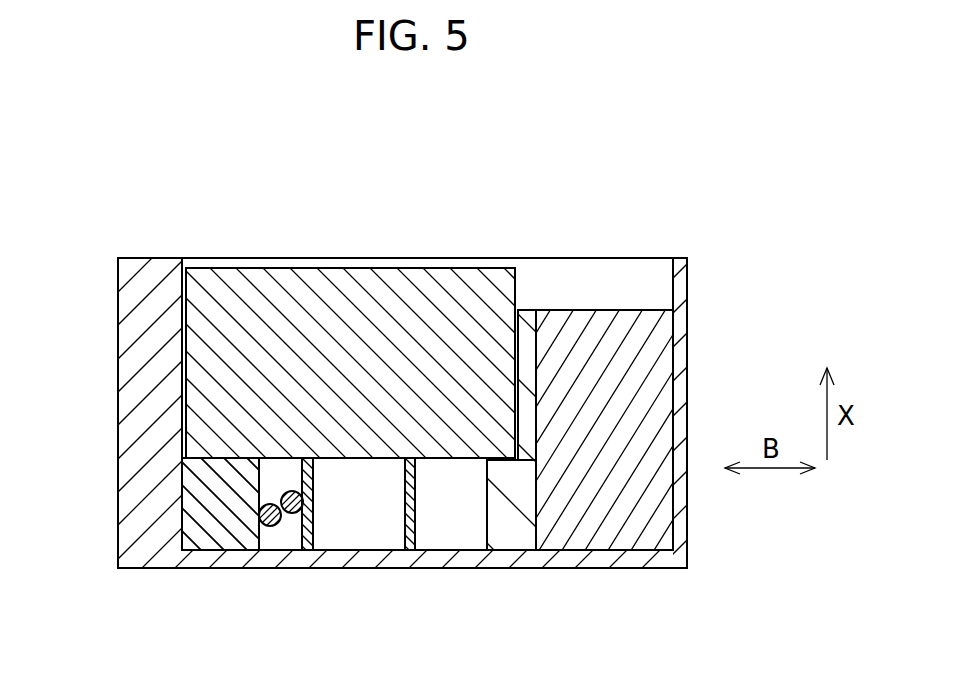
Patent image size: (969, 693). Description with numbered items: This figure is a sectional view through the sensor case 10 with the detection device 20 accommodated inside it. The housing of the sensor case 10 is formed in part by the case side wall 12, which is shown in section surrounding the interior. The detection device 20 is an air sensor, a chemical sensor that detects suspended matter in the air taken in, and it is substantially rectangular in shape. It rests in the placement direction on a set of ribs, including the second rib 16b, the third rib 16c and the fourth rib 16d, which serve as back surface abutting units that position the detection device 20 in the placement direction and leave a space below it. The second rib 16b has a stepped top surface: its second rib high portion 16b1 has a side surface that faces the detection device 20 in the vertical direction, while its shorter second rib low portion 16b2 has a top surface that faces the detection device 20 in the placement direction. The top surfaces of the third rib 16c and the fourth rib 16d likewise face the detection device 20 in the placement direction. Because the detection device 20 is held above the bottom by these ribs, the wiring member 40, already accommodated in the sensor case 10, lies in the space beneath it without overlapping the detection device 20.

The sensor case 10 is at (168, 168).
The case side wall 12 is at (145, 387).
The detection device 20 is at (370, 282).
The second rib 16b is at (513, 538).
The second rib high portion 16b1 is at (527, 345).
The second rib low portion 16b2 is at (497, 468).
The third rib 16c is at (403, 527).
The fourth rib 16d is at (217, 532).
The wiring member 40 is at (270, 522).